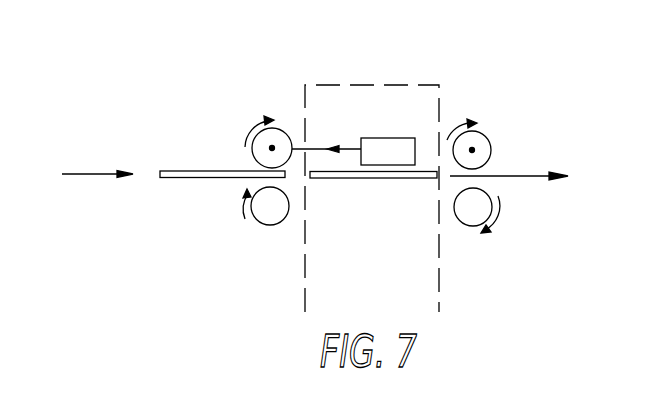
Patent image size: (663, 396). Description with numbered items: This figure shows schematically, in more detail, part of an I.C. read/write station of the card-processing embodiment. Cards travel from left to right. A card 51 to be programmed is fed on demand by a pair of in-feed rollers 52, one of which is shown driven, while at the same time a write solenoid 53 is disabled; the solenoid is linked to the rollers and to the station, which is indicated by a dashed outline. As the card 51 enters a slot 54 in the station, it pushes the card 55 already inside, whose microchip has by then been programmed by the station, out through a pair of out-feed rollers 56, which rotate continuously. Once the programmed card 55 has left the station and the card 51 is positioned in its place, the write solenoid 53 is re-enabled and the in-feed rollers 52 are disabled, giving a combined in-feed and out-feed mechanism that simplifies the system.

The card 51 is at (187, 180).
The in-feed rollers 52 is at (283, 129).
The write solenoid 53 is at (392, 137).
The slot 54 is at (311, 172).
The card 55 is at (387, 179).
The out-feed rollers 56 is at (487, 131).